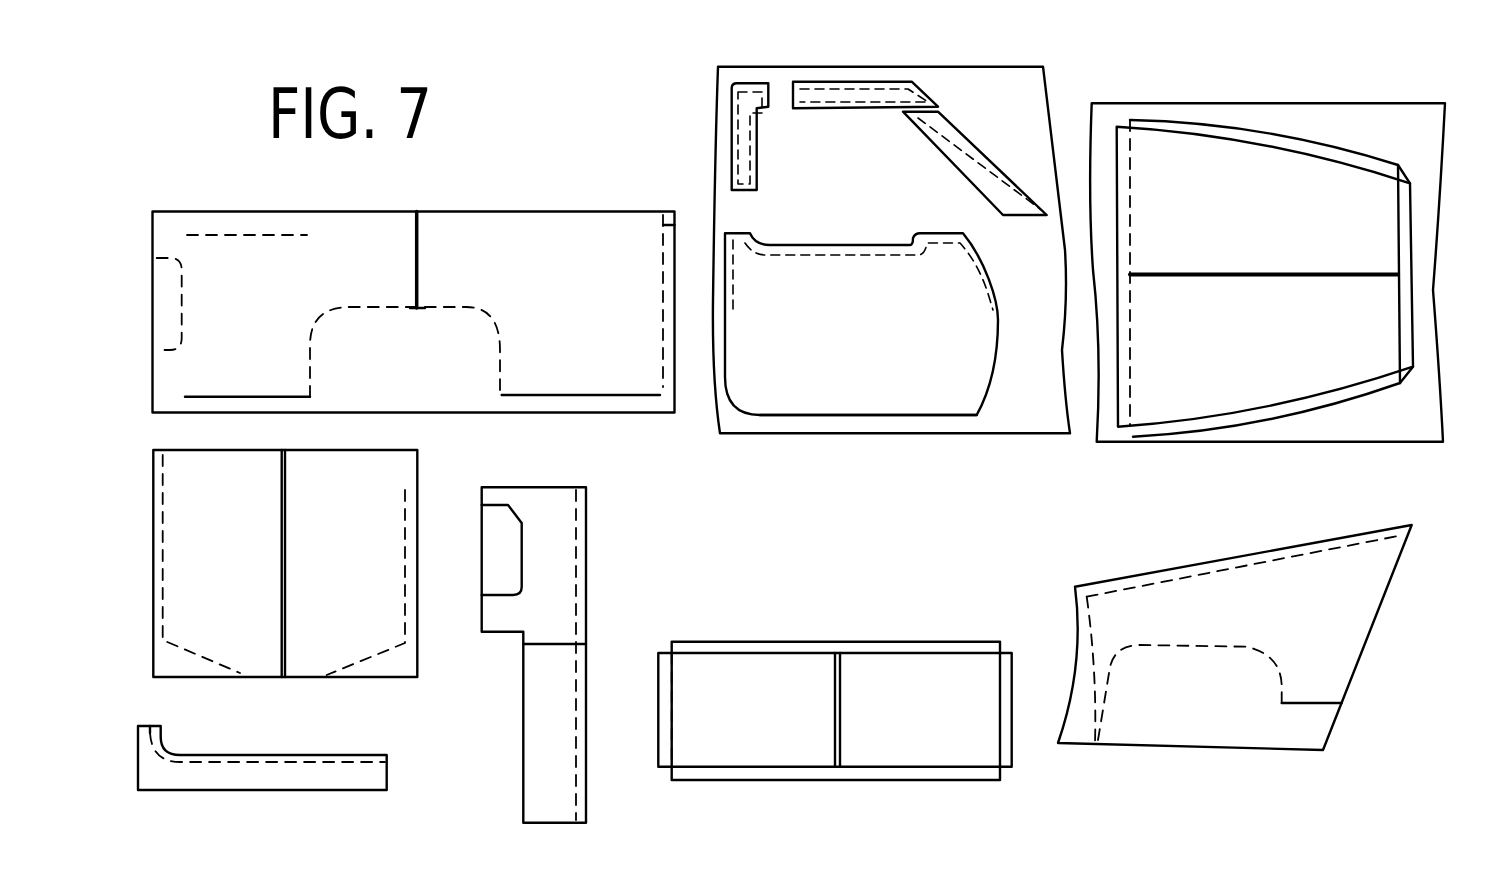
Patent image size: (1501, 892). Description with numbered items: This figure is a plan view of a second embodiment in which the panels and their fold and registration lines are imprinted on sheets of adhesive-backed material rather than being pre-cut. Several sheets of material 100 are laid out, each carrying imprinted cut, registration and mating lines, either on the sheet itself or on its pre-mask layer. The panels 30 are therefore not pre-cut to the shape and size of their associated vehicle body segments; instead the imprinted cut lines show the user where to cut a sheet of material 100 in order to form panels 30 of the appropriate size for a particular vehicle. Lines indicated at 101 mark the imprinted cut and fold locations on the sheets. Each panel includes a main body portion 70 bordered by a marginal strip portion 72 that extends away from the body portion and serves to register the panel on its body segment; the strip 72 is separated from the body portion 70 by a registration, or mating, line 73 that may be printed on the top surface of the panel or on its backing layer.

The sheet of material 100 is at (310, 220).
The panel 30 is at (510, 253).
The fold/seam line 101 is at (502, 363).
The main body portion 70 is at (813, 380).
The marginal strip portion 72 is at (828, 648).
The registration line 73 is at (767, 652).